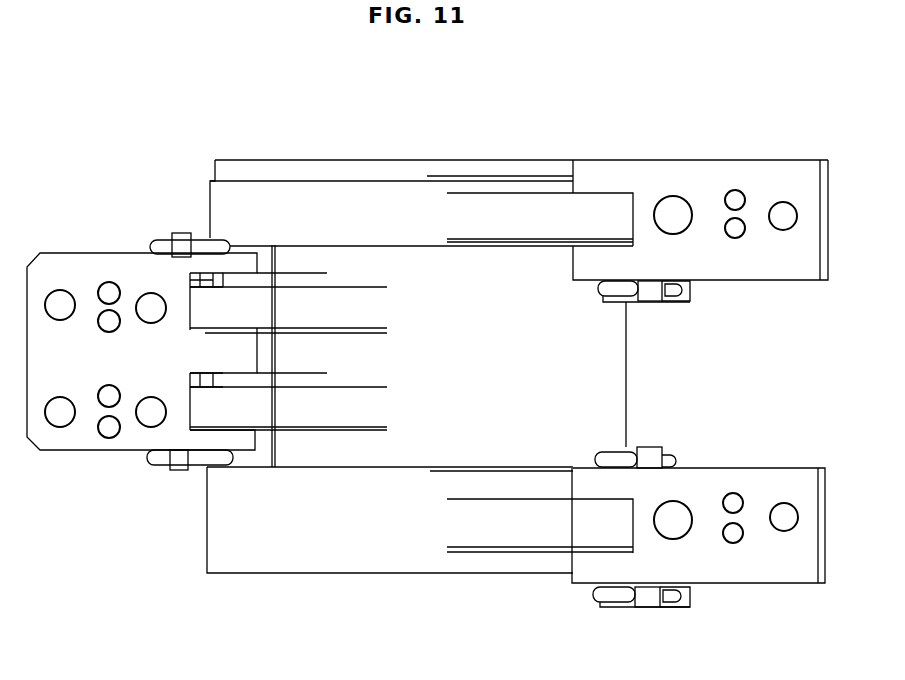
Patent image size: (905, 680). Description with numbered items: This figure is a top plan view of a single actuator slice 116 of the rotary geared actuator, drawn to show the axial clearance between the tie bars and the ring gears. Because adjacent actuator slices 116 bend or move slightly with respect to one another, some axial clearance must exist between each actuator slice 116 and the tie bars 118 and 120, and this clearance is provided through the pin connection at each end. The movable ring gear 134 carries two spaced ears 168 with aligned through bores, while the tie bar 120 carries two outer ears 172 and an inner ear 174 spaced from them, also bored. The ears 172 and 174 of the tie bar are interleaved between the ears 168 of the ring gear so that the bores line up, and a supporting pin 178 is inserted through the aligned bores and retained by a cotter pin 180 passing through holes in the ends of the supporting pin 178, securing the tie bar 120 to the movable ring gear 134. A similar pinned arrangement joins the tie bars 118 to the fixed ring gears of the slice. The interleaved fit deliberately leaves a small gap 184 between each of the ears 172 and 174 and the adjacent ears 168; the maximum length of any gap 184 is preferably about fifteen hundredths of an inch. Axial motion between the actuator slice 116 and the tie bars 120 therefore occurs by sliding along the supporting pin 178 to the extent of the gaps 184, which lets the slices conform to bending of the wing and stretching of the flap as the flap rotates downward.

The actuator slice 116 is at (415, 158).
The tie bar 118 is at (725, 158).
The tie bar 120 is at (60, 463).
The movable ring gear 134 is at (610, 372).
The ear 168 is at (227, 303).
The outer ear 172 is at (240, 262).
The inner ear 174 is at (225, 353).
The supporting pin 178 is at (190, 280).
The cotter pin 180 is at (207, 246).
The gap 184 is at (363, 333).